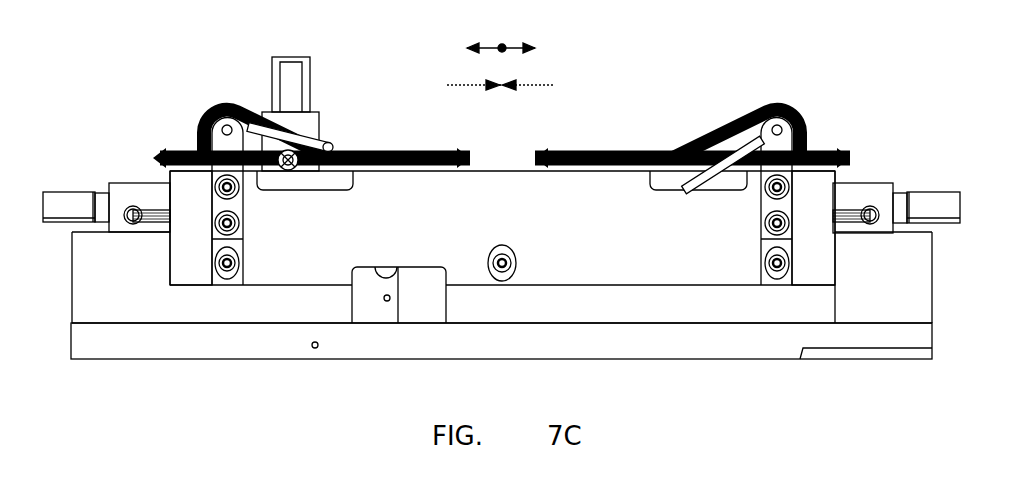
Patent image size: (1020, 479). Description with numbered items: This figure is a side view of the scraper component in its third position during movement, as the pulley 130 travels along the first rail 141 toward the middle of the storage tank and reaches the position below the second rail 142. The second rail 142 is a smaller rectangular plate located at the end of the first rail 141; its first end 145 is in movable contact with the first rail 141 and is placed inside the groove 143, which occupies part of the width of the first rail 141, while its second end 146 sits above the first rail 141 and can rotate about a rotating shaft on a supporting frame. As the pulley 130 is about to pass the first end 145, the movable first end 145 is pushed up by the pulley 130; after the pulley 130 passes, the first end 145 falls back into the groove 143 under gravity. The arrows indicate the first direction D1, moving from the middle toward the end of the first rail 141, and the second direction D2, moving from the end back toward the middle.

The pulley 130 is at (302, 168).
The first rail 141 is at (502, 172).
The second rail 142 is at (293, 130).
The groove 143 is at (343, 183).
The first end 145 is at (327, 140).
The second end 146 is at (257, 122).
The first direction D1 is at (517, 50).
The second direction D2 is at (518, 86).